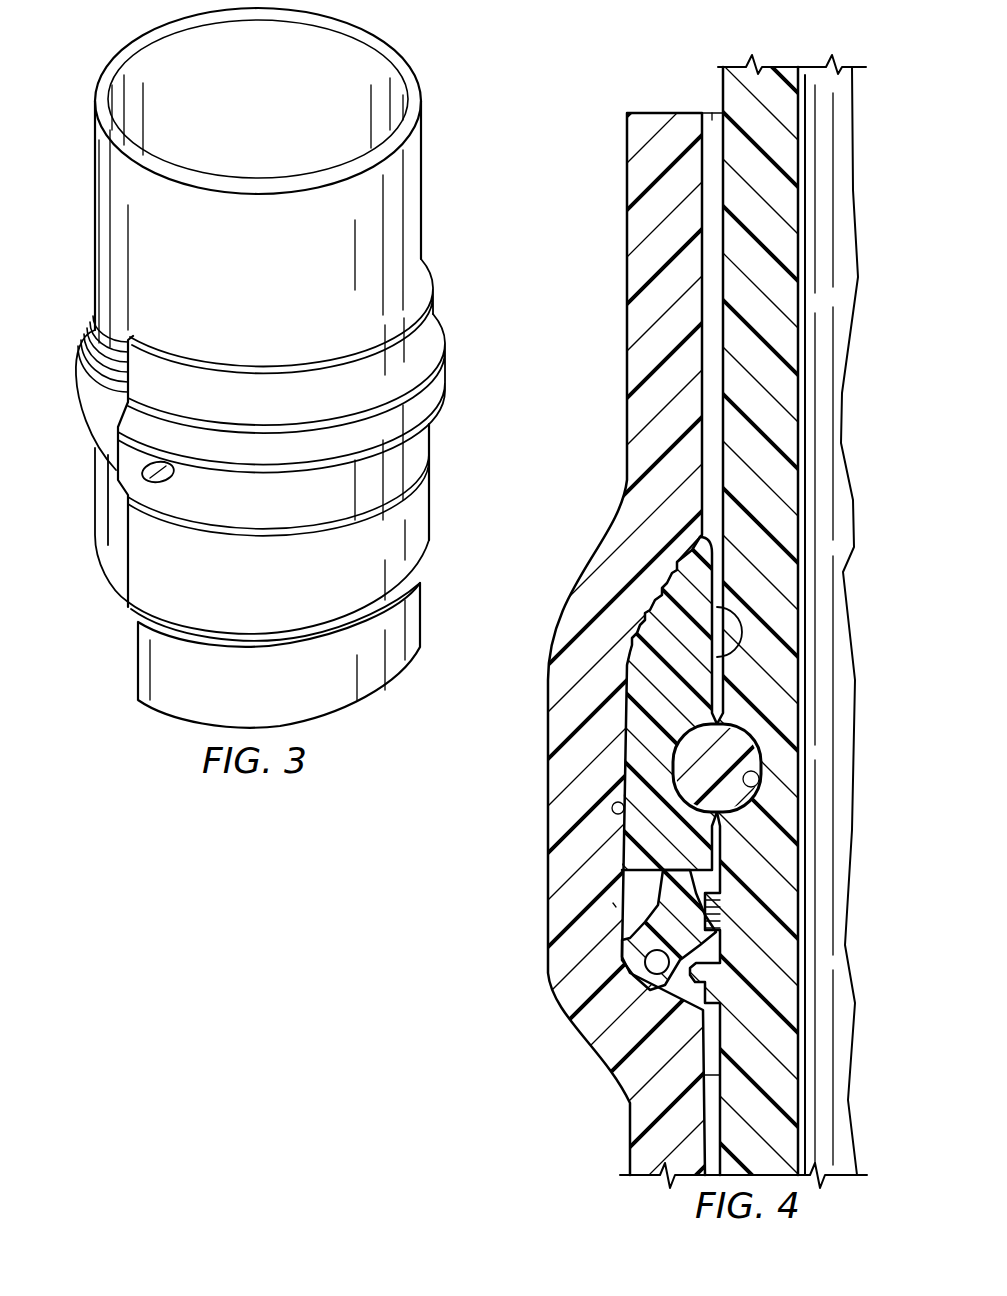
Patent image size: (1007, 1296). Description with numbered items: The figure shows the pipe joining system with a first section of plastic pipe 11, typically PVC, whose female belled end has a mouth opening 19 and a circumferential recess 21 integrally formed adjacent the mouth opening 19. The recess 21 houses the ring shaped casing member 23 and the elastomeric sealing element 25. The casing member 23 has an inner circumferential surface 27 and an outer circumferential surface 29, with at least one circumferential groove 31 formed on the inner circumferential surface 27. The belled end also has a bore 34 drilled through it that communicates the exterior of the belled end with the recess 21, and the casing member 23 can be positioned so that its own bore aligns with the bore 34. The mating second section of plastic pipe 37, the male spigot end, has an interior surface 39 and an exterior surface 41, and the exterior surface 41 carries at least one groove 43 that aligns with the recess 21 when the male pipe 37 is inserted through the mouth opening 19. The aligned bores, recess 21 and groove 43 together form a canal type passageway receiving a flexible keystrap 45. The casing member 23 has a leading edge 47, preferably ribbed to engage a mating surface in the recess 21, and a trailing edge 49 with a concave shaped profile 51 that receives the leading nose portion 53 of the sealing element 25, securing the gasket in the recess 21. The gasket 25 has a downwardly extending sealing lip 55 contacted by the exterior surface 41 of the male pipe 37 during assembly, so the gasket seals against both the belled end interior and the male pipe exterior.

In FIG. 3, the first section of plastic pipe 11 is at (441, 490).
In FIG. 4, the first section of plastic pipe 11 is at (533, 941).
In FIG. 4, the mouth opening 19 is at (713, 112).
In FIG. 4, the circumferential recess 21 is at (636, 735).
In FIG. 3, the ring shaped casing member 23 is at (78, 384).
In FIG. 4, the ring shaped casing member 23 is at (630, 648).
In FIG. 3, the sealing element 25 is at (108, 465).
In FIG. 4, the sealing element 25 is at (705, 1000).
In FIG. 4, the inner circumferential surface 27 is at (735, 613).
In FIG. 4, the outer circumferential surface 29 is at (624, 805).
In FIG. 4, the circumferential groove 31 is at (679, 743).
In FIG. 3, the bore 34 is at (148, 486).
In FIG. 3, the second section of plastic pipe 37 is at (95, 186).
In FIG. 4, the second section of plastic pipe 37 is at (803, 291).
In FIG. 4, the interior surface 39 is at (808, 66).
In FIG. 4, the exterior surface 41 is at (718, 66).
In FIG. 4, the groove 43 is at (759, 781).
In FIG. 4, the flexible keystrap 45 is at (758, 735).
In FIG. 4, the leading edge 47 is at (650, 562).
In FIG. 4, the trailing edge 49 is at (615, 905).
In FIG. 4, the concave shaped profile 51 is at (718, 905).
In FIG. 4, the leading nose portion 53 is at (666, 868).
In FIG. 4, the sealing lip 55 is at (715, 955).